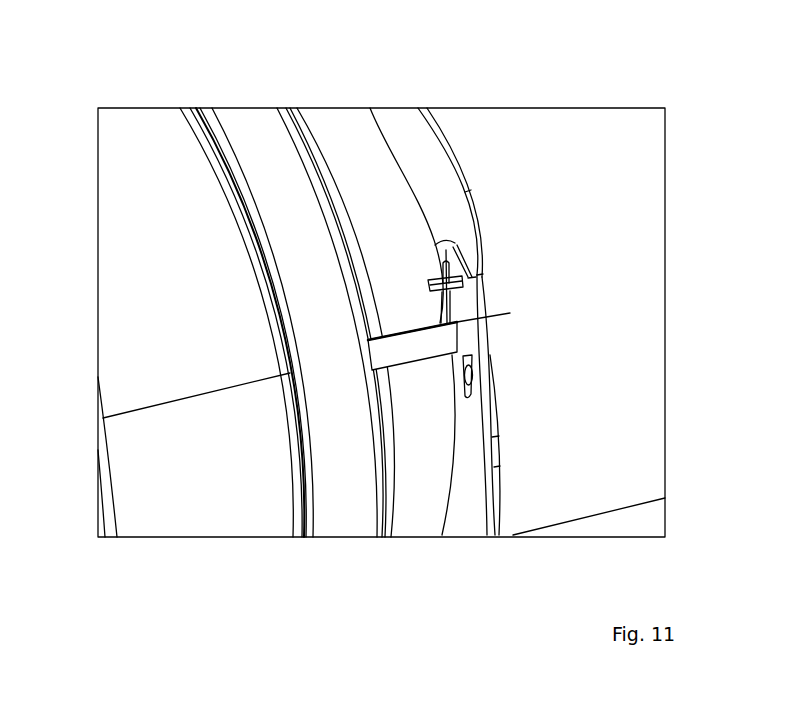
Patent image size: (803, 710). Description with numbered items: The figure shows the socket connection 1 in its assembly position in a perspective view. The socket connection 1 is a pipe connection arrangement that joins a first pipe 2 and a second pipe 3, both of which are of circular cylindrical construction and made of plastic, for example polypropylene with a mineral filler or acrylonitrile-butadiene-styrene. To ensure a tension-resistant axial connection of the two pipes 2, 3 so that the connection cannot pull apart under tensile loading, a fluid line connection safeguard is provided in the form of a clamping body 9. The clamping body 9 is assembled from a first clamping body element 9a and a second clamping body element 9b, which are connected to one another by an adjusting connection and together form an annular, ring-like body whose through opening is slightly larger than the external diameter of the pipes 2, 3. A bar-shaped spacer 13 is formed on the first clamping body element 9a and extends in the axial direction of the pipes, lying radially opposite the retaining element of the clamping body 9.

The socket connection 1 is at (384, 311).
The first pipe 2 is at (133, 299).
The second pipe 3 is at (612, 214).
The clamping body 9 is at (492, 321).
The first clamping body element 9a is at (478, 432).
The second clamping body element 9b is at (452, 217).
The spacer 13 is at (412, 350).